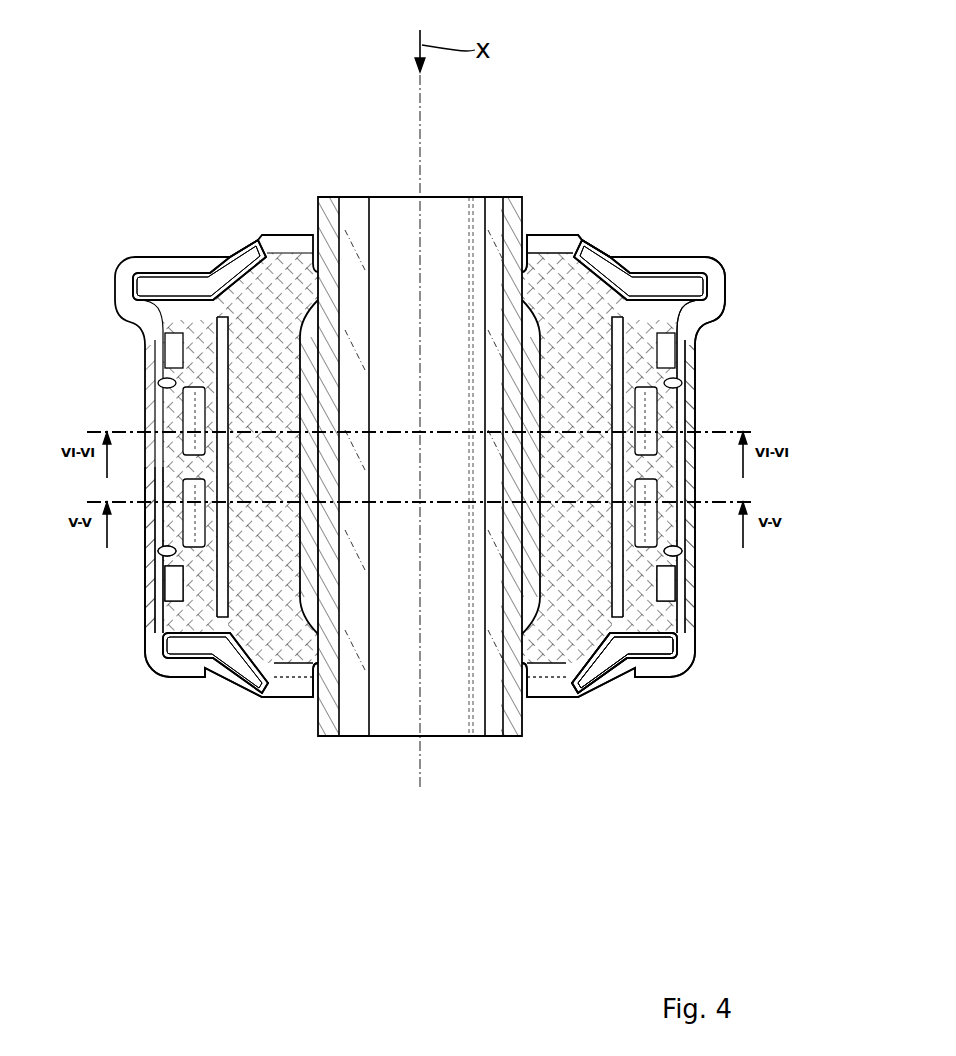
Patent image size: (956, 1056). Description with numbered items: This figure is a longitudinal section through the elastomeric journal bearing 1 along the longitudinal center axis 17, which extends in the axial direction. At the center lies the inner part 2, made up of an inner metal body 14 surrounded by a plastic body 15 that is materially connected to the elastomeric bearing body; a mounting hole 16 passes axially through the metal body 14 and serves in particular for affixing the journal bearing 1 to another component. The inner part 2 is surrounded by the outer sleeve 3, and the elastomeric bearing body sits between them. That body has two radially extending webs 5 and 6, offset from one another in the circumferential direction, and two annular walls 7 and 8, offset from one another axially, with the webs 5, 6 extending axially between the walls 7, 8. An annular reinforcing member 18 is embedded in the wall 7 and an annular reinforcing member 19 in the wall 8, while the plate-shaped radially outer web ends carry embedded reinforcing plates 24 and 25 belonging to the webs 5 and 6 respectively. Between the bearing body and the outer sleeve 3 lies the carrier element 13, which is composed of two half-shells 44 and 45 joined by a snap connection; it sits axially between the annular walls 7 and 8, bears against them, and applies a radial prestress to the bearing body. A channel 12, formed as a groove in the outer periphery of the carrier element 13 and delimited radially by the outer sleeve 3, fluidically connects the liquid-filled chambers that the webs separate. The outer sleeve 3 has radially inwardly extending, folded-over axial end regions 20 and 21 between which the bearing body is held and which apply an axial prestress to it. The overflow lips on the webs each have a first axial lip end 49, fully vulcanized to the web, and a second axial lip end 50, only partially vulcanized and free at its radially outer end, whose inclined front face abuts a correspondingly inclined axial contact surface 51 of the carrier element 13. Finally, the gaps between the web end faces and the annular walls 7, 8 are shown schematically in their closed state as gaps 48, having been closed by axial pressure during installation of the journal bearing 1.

The journal bearing 1 is at (196, 98).
The inner part 2 is at (486, 736).
The outer sleeve 3 is at (182, 595).
The web 5 is at (590, 408).
The web 6 is at (248, 400).
The annular wall 7 is at (183, 660).
The annular wall 8 is at (167, 276).
The channel 12 is at (660, 593).
The carrier element 13 is at (180, 612).
The inner metal body 14 is at (357, 740).
The plastic body 15 is at (331, 740).
The mounting hole 16 is at (447, 720).
The longitudinal center axis 17 is at (421, 165).
The reinforcing member 18 is at (640, 648).
The reinforcing member 19 is at (660, 286).
The axial end region 20 is at (658, 670).
The axial end region 21 is at (692, 262).
The reinforcing plate 24 is at (618, 322).
The reinforcing plate 25 is at (222, 322).
The half-shell 44 is at (672, 616).
The half-shell 45 is at (185, 630).
The closed gap 48 is at (228, 304).
The first axial lip end 49 is at (165, 465).
The second axial lip end 50 is at (160, 383).
The axial contact surface 51 is at (166, 372).